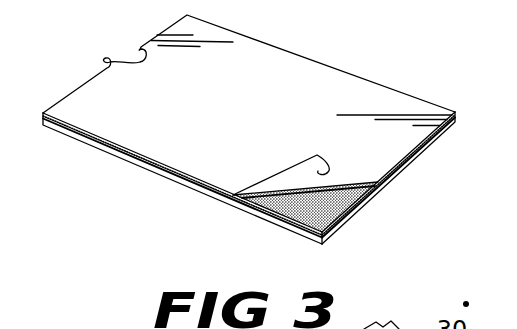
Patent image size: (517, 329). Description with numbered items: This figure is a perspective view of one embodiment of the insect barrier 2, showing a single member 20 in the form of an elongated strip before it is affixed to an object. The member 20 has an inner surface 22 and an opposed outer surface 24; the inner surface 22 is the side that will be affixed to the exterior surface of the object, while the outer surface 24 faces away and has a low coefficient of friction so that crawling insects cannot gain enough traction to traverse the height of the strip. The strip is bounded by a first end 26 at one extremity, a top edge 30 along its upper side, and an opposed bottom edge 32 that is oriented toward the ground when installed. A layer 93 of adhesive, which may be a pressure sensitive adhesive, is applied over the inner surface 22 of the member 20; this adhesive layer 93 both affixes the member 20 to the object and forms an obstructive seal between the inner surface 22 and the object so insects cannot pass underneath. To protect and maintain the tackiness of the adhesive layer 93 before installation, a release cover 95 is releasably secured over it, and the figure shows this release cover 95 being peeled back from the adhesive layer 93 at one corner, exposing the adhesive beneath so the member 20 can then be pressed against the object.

The insect barrier 2 is at (336, 236).
The member 20 is at (93, 143).
The inner surface 22 is at (385, 176).
The outer surface 24 is at (151, 172).
The first end 26 is at (425, 150).
The top edge 30 is at (306, 55).
The bottom edge 32 is at (201, 190).
The layer of adhesive 93 is at (338, 202).
The release cover 95 is at (326, 170).